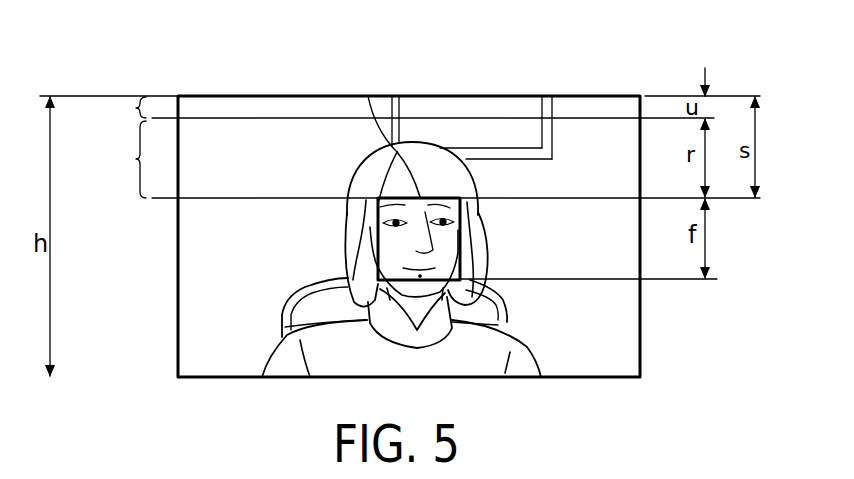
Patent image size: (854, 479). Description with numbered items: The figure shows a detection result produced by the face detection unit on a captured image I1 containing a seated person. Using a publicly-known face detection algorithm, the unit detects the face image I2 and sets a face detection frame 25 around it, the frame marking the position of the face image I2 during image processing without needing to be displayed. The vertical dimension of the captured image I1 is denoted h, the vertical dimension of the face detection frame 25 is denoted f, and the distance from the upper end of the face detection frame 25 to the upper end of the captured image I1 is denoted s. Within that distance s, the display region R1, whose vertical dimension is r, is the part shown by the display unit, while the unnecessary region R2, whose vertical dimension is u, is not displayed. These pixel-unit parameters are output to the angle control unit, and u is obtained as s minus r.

The captured image I1 is at (298, 96).
The face detection frame 25 is at (418, 192).
The face image I2 is at (398, 237).
The display region R1 is at (431, 159).
The unnecessary region R2 is at (377, 109).